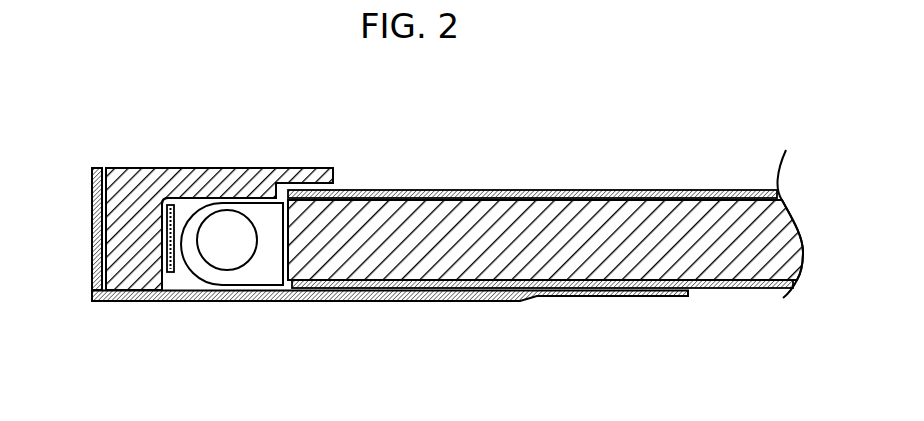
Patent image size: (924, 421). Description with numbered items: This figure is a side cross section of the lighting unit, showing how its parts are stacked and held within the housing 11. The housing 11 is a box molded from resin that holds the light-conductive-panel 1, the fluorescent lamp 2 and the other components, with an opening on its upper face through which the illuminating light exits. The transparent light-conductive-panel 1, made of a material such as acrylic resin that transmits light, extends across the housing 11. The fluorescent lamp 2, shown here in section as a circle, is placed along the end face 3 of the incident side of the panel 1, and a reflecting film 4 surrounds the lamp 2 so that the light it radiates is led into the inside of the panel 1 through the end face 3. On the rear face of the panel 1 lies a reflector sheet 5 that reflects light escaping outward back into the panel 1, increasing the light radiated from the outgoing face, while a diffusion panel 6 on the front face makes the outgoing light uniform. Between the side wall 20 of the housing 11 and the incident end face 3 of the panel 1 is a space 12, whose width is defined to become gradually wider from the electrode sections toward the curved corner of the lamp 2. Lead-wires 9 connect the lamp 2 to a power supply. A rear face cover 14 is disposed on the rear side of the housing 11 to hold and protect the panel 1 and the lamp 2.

The light-conductive-panel 1 is at (547, 253).
The fluorescent lamp 2 is at (230, 248).
The end faces 3 is at (290, 232).
The reflecting film 4 is at (196, 280).
The reflector sheet 5 is at (748, 288).
The diffusion panel 6 is at (605, 190).
The lead-wires 9 is at (142, 288).
The housing 11 is at (123, 250).
The space 12 is at (184, 206).
The rear face cover 14 is at (433, 301).
The side wall 20 is at (166, 244).